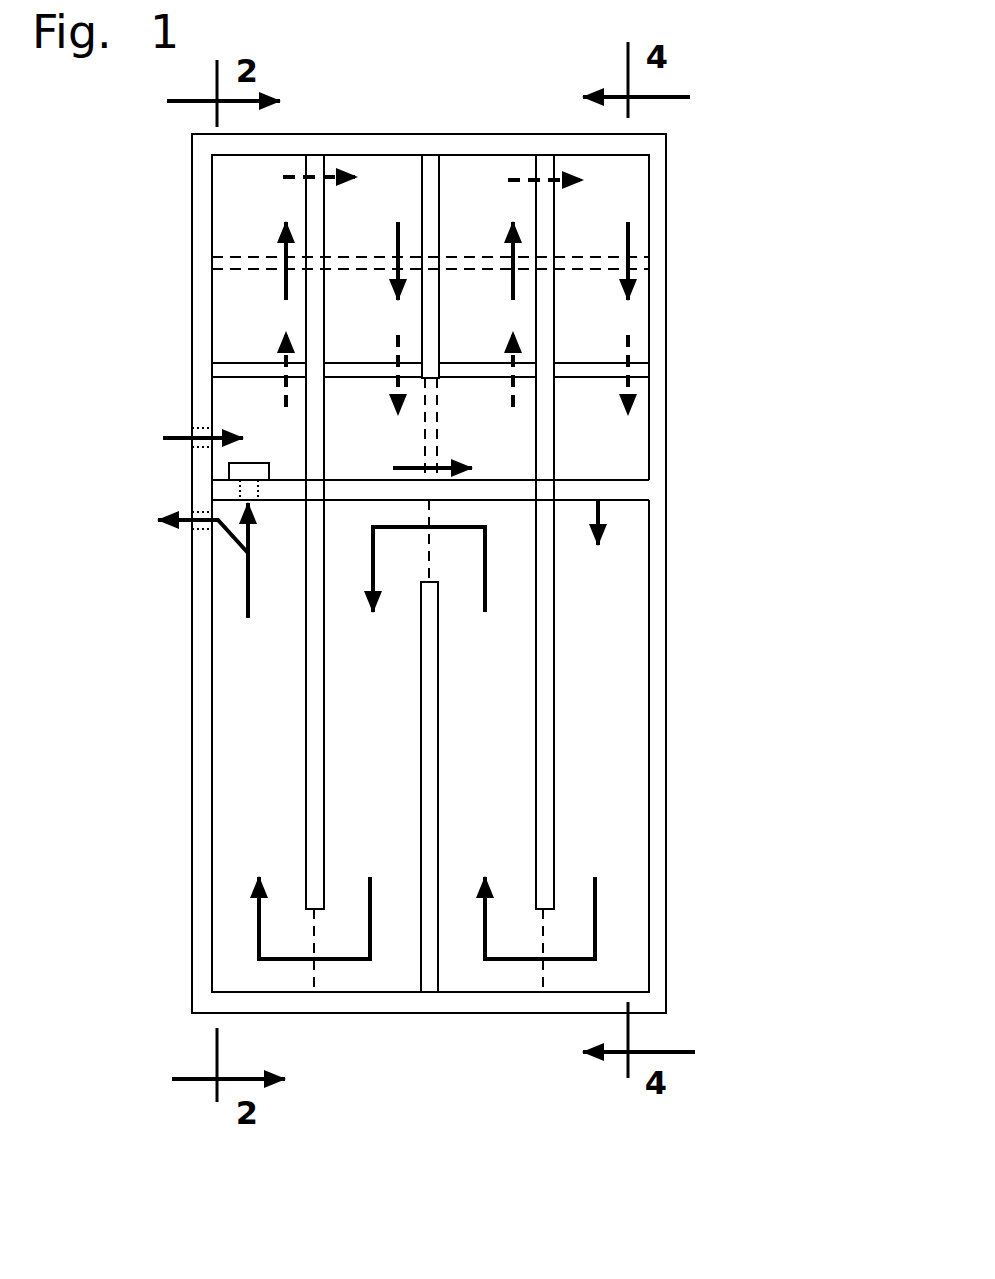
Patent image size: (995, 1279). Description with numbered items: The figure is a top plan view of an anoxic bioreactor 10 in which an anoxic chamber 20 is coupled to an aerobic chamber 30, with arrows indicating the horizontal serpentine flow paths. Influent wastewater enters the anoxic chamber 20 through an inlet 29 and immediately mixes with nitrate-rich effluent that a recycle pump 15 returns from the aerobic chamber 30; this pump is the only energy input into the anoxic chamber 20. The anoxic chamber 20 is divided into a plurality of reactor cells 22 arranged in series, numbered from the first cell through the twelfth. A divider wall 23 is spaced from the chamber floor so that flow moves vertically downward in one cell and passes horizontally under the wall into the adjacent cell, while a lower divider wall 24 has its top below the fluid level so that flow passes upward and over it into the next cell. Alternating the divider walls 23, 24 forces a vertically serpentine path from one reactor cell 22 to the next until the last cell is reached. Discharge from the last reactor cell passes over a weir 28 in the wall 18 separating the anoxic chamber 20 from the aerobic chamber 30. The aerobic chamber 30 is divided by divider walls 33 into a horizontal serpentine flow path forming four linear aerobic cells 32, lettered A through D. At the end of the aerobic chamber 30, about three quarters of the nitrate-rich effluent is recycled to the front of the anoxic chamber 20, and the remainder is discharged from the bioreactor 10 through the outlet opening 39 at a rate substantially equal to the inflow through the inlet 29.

The anoxic bioreactor 10 is at (160, 973).
The recycle pump 15 is at (222, 490).
The wall 18 is at (505, 495).
The anoxic chamber 20 is at (495, 77).
The reactor cell 22 is at (400, 176).
The divider wall 23 is at (240, 360).
The divider wall 24 is at (238, 274).
The weir 28 is at (622, 490).
The inlet 29 is at (200, 428).
The aerobic chamber 30 is at (676, 978).
The aerobic cell 32 is at (620, 862).
The divider wall 33 is at (315, 710).
The outlet opening 39 is at (197, 522).